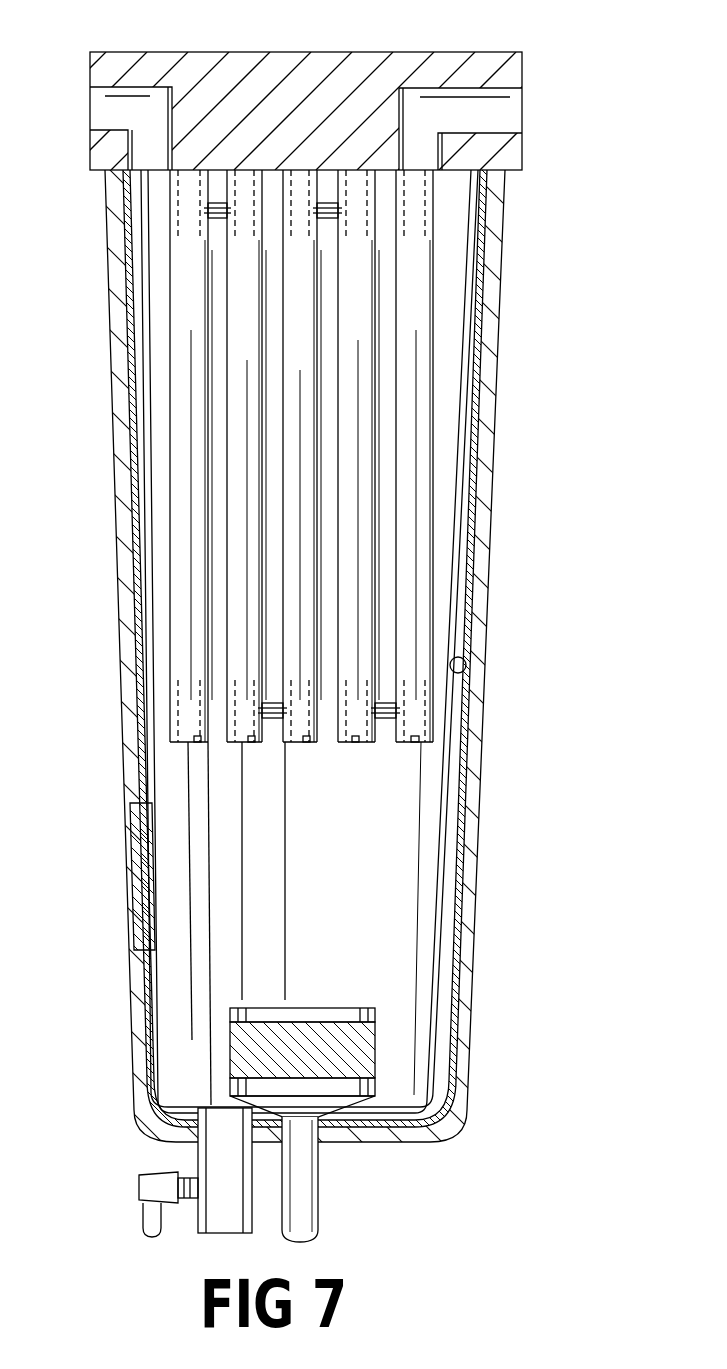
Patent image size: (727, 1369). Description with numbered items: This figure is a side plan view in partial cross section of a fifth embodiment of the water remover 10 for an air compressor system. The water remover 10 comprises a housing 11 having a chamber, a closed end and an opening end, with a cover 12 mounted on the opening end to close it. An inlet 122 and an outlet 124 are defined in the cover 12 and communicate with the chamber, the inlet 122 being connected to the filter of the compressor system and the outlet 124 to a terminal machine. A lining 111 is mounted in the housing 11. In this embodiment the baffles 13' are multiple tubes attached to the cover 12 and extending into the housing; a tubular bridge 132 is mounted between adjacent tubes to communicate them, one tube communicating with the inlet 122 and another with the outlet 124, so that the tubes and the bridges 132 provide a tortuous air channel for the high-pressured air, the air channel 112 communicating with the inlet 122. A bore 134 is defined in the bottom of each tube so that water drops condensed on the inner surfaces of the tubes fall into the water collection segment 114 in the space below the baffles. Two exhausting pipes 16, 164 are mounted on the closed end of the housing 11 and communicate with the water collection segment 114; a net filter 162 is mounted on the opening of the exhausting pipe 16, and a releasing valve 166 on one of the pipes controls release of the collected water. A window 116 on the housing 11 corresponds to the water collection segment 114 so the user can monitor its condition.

The water remover 10 is at (499, 598).
The housing 11 is at (492, 482).
The lining 111 is at (466, 669).
The external air channel 112 is at (460, 405).
The water collection segment 114 is at (432, 855).
The window 116 is at (157, 882).
The cover 12 is at (299, 85).
The inlet 122 is at (136, 97).
The outlet 124 is at (505, 121).
The baffles 13' is at (366, 637).
The tubular bridge 132 is at (272, 718).
The bore 134 is at (413, 745).
The exhausting pipe 16 is at (300, 1188).
The net filter 162 is at (360, 1050).
The exhausting pipe 164 is at (222, 1130).
The releasing valve 166 is at (160, 1185).